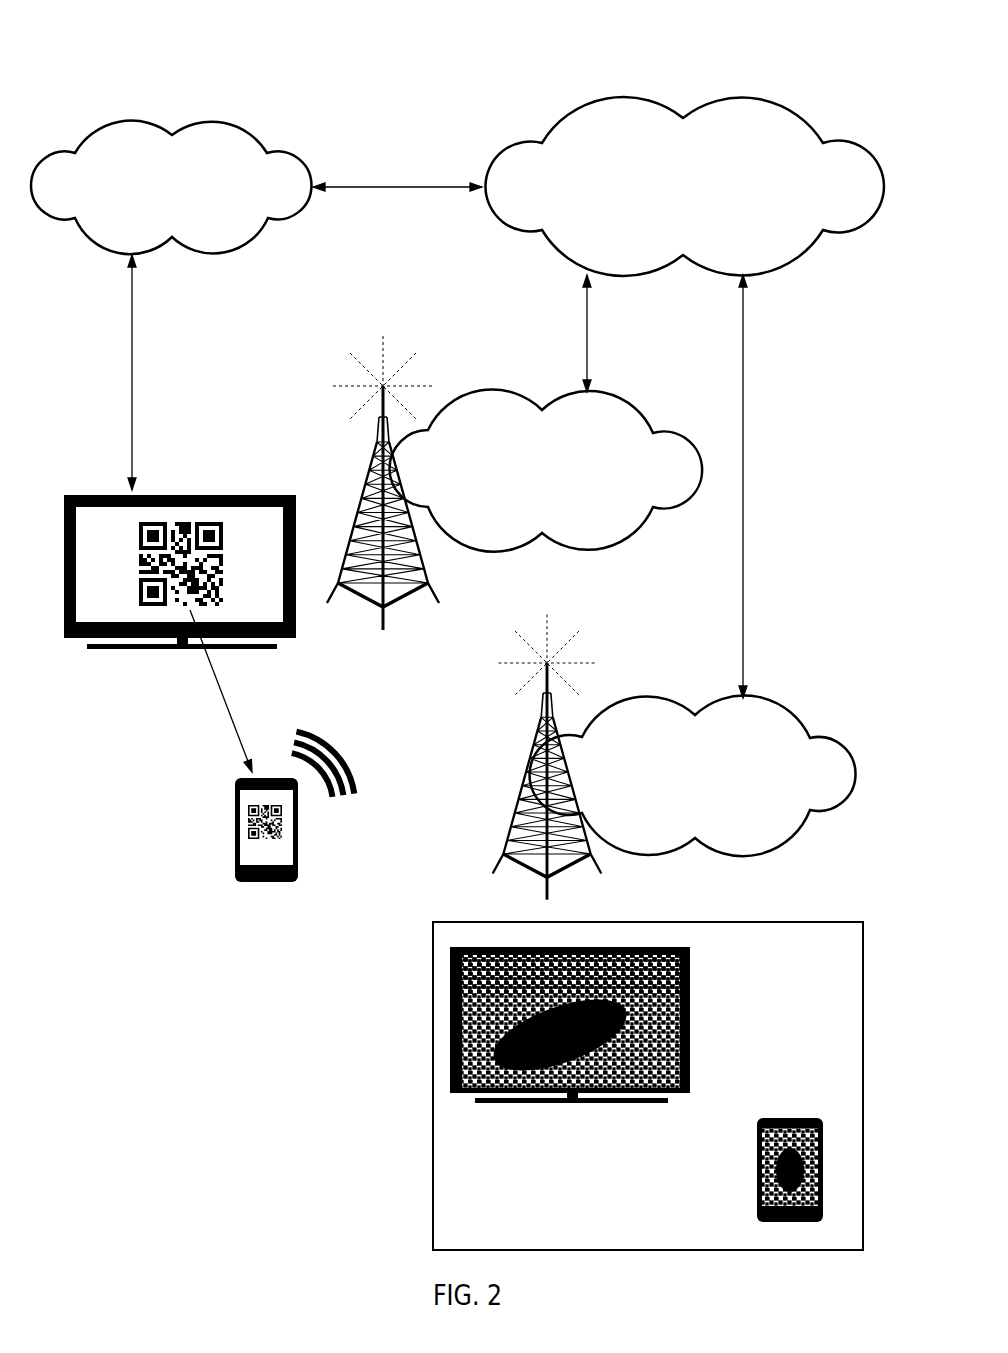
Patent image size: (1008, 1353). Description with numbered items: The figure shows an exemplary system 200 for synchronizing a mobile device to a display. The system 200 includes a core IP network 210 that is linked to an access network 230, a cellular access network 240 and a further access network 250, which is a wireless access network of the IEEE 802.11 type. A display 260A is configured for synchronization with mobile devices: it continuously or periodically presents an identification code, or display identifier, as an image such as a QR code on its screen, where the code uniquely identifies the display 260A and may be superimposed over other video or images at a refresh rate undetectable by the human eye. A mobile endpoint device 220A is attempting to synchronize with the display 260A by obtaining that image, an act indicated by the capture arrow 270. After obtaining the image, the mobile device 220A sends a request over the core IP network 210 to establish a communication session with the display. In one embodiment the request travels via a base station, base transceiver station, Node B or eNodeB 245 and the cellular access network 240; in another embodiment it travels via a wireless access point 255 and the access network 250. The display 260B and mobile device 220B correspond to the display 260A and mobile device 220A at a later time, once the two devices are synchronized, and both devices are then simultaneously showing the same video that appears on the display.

The system 200 is at (128, 23).
The core IP network 210 is at (702, 210).
The access network 230 is at (190, 210).
The cellular access network 240 is at (558, 506).
The base station 245 is at (427, 567).
The access network 250 is at (713, 812).
The wireless access point 255 is at (510, 832).
The display 260A is at (110, 648).
The display 260B is at (498, 1105).
The mobile endpoint device 220A is at (235, 827).
The mobile device 220B is at (757, 1170).
The QR code capture by mobile device 270 is at (223, 685).